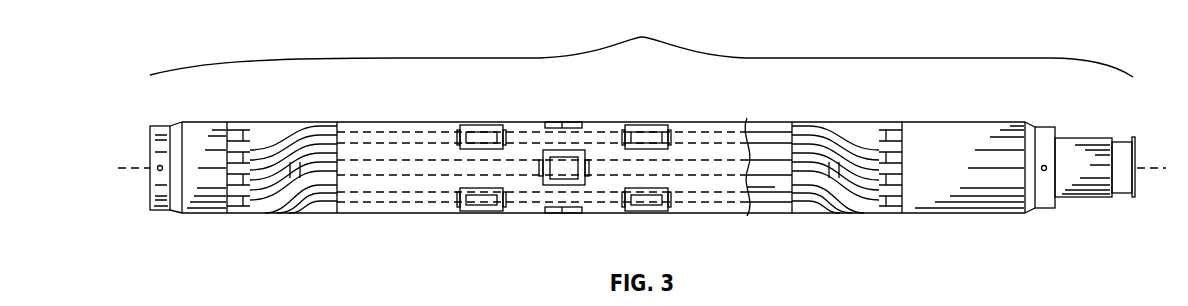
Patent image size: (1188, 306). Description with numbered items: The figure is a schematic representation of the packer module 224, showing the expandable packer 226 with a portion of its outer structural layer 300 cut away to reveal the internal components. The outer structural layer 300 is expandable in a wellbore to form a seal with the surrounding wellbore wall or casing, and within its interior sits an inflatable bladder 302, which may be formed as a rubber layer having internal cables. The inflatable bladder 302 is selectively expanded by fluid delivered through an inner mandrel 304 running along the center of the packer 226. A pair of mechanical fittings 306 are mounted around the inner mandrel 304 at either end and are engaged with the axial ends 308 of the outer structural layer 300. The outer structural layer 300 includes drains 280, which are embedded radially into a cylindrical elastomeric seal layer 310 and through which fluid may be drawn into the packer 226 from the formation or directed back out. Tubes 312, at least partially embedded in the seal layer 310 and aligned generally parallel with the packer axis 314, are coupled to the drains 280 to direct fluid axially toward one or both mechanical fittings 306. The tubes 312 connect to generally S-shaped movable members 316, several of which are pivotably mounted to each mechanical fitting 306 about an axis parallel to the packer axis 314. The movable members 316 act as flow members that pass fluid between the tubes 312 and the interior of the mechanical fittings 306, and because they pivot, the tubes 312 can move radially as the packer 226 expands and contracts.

The packer module 224 is at (641, 44).
The packer 226 is at (960, 92).
The drains 280 is at (480, 213).
The outer structural layer 300 is at (745, 121).
The inflatable bladder 302 is at (778, 121).
The inner mandrel 304 is at (1137, 151).
The mechanical fittings 306 is at (205, 214).
The axial ends 308 is at (335, 215).
The seal layer 310 is at (402, 121).
The tubes 312 is at (418, 176).
The packer axis 314 is at (1152, 170).
The movable members 316 is at (262, 215).